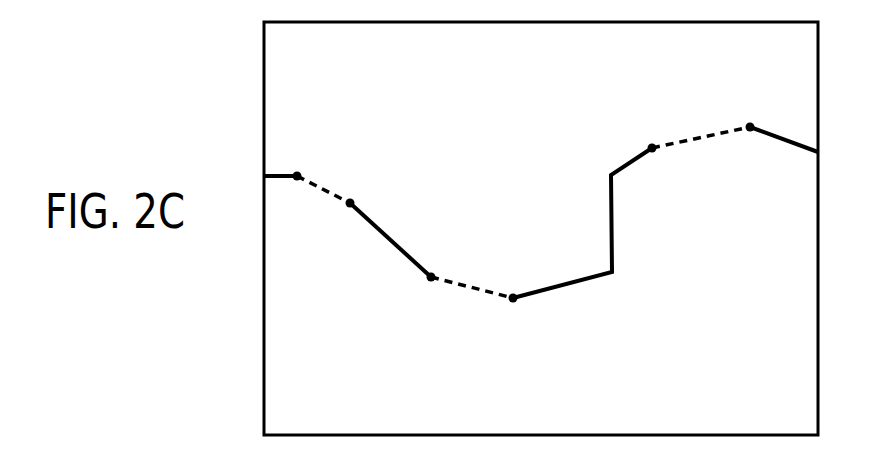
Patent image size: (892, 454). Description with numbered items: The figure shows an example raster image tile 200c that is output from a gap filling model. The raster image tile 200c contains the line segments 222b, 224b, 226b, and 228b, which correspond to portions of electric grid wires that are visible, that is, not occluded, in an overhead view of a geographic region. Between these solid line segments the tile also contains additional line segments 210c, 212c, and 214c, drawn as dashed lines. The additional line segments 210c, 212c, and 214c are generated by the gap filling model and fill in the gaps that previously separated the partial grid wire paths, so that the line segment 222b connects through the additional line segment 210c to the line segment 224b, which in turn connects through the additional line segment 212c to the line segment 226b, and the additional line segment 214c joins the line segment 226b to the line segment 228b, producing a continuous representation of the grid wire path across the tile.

The raster image tile 200c is at (222, 130).
The additional line segment 210c is at (333, 193).
The additional line segment 212c is at (470, 285).
The additional line segment 214c is at (690, 138).
The line segment 222b is at (281, 178).
The line segment 224b is at (402, 258).
The line segment 226b is at (578, 286).
The line segment 228b is at (787, 143).